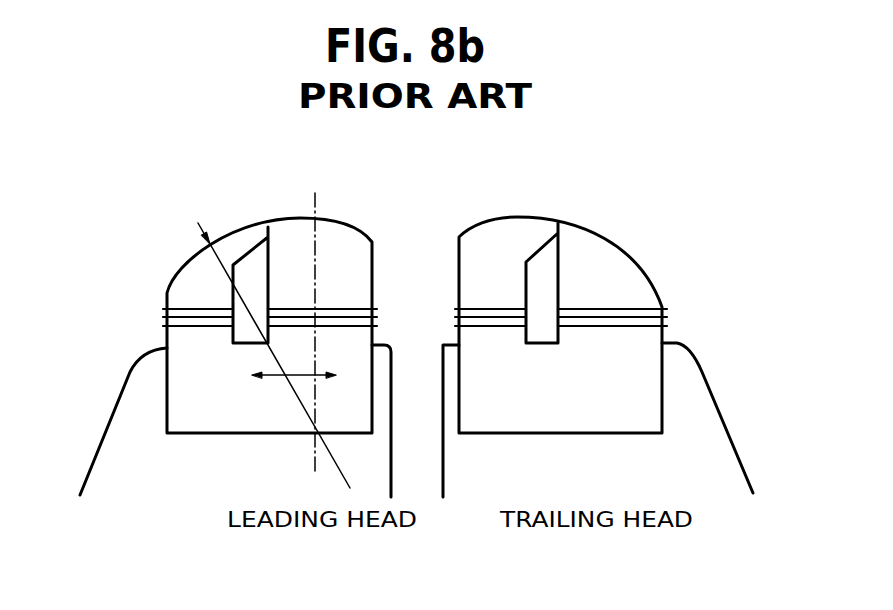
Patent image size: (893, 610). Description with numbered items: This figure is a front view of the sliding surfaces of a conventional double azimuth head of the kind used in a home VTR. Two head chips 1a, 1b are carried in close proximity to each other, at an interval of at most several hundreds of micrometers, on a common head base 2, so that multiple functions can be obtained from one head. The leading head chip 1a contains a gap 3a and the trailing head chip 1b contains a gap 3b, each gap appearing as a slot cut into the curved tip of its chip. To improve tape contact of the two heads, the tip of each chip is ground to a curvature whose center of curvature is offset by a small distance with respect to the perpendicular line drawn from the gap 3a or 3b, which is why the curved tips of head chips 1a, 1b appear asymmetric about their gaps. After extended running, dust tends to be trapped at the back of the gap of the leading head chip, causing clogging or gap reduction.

The head chip 1a is at (288, 414).
The head chip 1b is at (585, 415).
The head base 2 is at (703, 438).
The gap 3a is at (269, 226).
The gap 3b is at (558, 223).